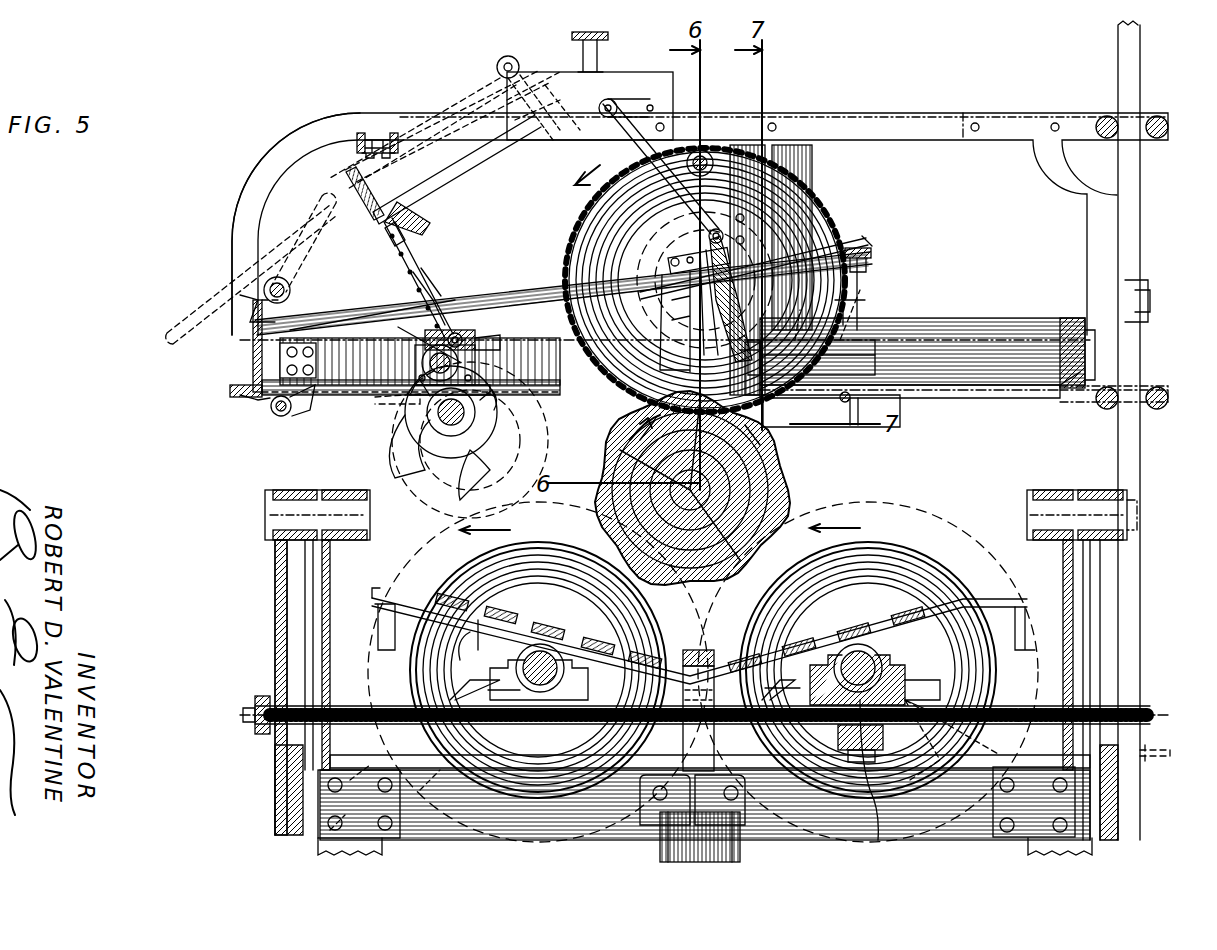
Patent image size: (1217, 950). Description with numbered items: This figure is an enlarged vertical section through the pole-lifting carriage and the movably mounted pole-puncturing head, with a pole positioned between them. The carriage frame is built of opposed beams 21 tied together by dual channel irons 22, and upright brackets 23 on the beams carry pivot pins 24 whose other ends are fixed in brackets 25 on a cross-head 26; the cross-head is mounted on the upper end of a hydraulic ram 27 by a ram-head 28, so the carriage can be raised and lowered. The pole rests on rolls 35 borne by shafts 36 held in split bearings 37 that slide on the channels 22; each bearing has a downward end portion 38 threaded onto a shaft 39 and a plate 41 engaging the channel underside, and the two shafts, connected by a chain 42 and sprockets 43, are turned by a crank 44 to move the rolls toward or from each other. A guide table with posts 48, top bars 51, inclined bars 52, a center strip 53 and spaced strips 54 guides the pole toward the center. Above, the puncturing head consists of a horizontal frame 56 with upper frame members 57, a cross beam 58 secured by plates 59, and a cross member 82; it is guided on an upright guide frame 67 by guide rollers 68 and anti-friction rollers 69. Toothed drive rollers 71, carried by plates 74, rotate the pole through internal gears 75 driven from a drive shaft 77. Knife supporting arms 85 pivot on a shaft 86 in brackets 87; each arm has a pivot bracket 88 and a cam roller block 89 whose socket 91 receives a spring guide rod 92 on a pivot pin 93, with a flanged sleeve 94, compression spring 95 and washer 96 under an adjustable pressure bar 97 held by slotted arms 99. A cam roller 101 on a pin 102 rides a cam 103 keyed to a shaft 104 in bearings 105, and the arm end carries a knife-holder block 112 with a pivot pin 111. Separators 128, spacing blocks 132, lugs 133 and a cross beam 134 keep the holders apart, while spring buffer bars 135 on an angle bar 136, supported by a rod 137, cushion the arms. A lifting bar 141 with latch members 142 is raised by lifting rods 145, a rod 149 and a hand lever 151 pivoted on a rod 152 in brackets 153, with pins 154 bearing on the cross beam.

The opposed beams 21 is at (300, 810).
The dual tie bars or channel irons 22 is at (490, 683).
The upright brackets 23 is at (1093, 492).
The pivot pins 24 is at (290, 515).
The upright brackets 25 is at (355, 565).
The cross-head 26 is at (578, 820).
The ram 27 is at (690, 845).
The bracket or ram-head 28 is at (768, 820).
The rolls or wheels 35 is at (490, 575).
The shafts 36 is at (545, 660).
The split bearings 37 is at (570, 700).
The end portion 38 is at (885, 738).
The threaded shaft 39 is at (935, 720).
The plate 41 is at (870, 790).
The chain 42 is at (255, 700).
The sprockets 43 is at (243, 720).
The crank 44 is at (1180, 748).
The upright posts 48 is at (318, 855).
The bars 51 is at (372, 625).
The metal bars 52 is at (481, 641).
The center strip or bar 53 is at (700, 650).
The strips 54 is at (560, 620).
The rectangular horizontal frame 56 is at (253, 355).
The upper frame members 57 is at (905, 125).
The cross beam 58 is at (586, 34).
The plates 59 is at (618, 76).
The upright guide frame 67 is at (1122, 50).
The guide rollers 68 is at (1160, 118).
The anti-friction rollers 69 is at (1140, 292).
The drive rollers 71 is at (572, 211).
The plates 74 is at (812, 155).
The internal gears 75 is at (578, 241).
The drive shaft 77 is at (702, 152).
The cross member 82 is at (357, 143).
The knife supporting arms 85 is at (540, 335).
The shaft 86 is at (272, 415).
The brackets 87 is at (262, 402).
The pivot bracket 88 is at (304, 418).
The cam roller block 89 is at (410, 325).
The socket 91 is at (458, 330).
The spring guide rod 92 is at (350, 162).
The pivot pin 93 is at (485, 330).
The flanged sleeve 94 is at (448, 325).
The compression spring 95 is at (433, 268).
The washer 96 is at (386, 232).
The pressure bar 97 is at (432, 205).
The slotted arms 99 is at (498, 64).
The cam roller 101 is at (480, 380).
The pin 102 is at (460, 362).
The cam 103 is at (400, 440).
The shaft 104 is at (440, 414).
The bearings 105 is at (385, 399).
The pivot pin 111 is at (680, 250).
The knife-holder block 112 is at (666, 262).
The separators 128 is at (700, 332).
The spacing blocks 132 is at (665, 354).
The lugs 133 is at (860, 286).
The cross beam 134 is at (872, 258).
The spring buffer bars 135 is at (930, 388).
The angle bar 136 is at (1075, 372).
The rod 137 is at (850, 400).
The lifting bar 141 is at (708, 232).
The latch member 142 is at (700, 300).
The lifting rods 145 is at (640, 105).
The rod 149 is at (440, 160).
The hand lever 151 is at (322, 200).
The shaft or rod 152 is at (292, 292).
The brackets 153 is at (258, 298).
The pins 154 is at (868, 240).